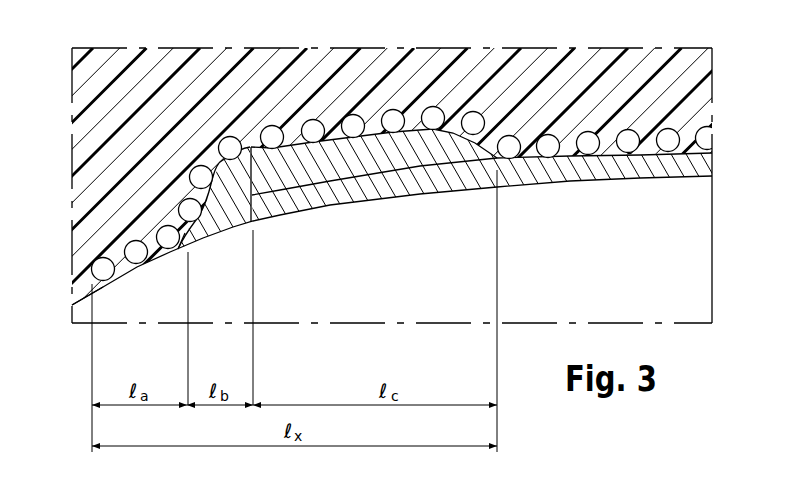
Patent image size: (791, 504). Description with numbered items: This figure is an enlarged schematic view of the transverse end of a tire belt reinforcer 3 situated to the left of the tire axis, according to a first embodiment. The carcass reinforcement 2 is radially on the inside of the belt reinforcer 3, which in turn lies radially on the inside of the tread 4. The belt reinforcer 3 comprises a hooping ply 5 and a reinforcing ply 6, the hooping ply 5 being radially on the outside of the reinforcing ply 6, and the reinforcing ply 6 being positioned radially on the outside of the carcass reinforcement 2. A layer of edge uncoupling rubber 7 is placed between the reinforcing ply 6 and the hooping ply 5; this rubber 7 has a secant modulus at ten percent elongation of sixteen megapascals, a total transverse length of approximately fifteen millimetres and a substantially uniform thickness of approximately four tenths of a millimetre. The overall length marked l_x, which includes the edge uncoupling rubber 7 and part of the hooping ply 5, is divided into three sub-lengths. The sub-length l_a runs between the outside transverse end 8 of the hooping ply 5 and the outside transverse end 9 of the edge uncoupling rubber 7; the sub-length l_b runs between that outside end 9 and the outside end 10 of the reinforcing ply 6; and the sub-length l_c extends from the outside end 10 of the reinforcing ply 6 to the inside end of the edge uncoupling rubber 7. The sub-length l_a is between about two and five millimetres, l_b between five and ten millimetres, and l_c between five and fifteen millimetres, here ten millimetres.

The carcass reinforcement 2 is at (665, 187).
The belt reinforcer 3 is at (720, 127).
The tread 4 is at (677, 68).
The hooping ply 5 is at (628, 138).
The reinforcing ply 6 is at (672, 163).
The layer of edge uncoupling rubber 7 is at (447, 142).
The outside transverse end of the hooping ply 8 is at (95, 258).
The outside transverse end of the edge uncoupling rubber 9 is at (187, 233).
The outside end of the reinforcing ply 10 is at (248, 188).